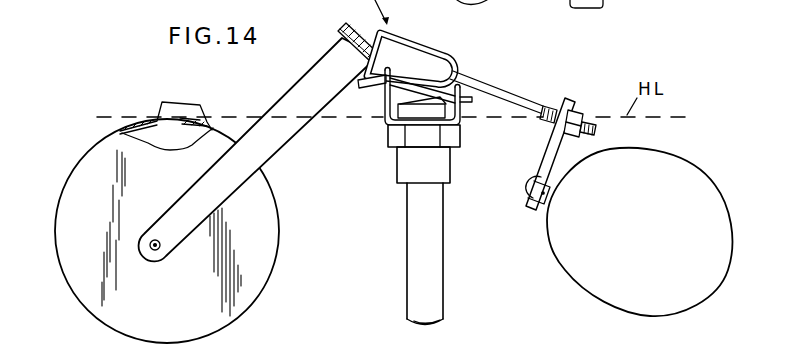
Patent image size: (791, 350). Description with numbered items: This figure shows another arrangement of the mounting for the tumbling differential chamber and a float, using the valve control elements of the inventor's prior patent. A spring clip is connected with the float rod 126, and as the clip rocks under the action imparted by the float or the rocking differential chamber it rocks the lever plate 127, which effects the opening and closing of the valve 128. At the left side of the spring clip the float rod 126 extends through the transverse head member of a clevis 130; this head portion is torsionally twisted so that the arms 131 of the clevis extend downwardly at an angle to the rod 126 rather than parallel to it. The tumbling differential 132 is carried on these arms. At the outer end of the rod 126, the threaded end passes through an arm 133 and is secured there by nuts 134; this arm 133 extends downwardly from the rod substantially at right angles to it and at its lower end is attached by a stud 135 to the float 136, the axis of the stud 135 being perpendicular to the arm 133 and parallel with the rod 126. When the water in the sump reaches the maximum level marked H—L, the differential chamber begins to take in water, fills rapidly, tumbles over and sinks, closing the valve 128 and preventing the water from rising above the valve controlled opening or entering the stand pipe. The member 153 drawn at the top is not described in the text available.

The float rod 126 is at (474, 80).
The lever plate 127 is at (377, 90).
The valve 128 is at (386, 149).
The clevis 130 is at (259, 142).
The arms 131 is at (267, 130).
The tumbling differential 132 is at (98, 302).
The arm 133 is at (557, 143).
The nuts 134 is at (579, 106).
The stud 135 is at (548, 212).
The float 136 is at (680, 168).
The valve member 153 is at (603, 3).